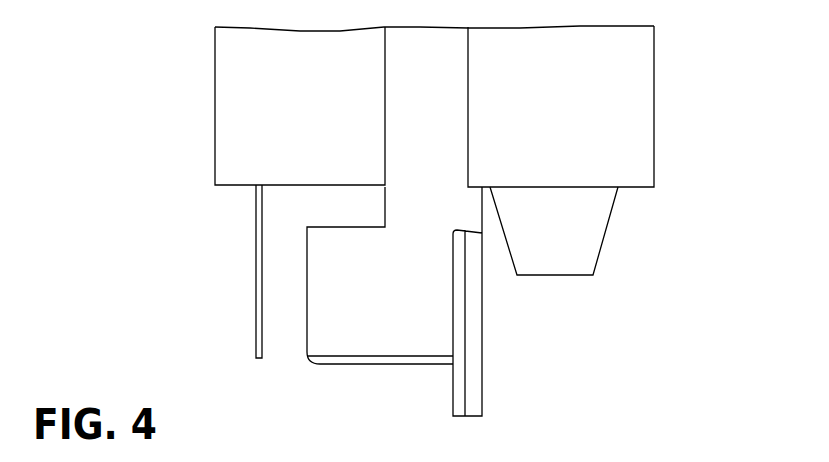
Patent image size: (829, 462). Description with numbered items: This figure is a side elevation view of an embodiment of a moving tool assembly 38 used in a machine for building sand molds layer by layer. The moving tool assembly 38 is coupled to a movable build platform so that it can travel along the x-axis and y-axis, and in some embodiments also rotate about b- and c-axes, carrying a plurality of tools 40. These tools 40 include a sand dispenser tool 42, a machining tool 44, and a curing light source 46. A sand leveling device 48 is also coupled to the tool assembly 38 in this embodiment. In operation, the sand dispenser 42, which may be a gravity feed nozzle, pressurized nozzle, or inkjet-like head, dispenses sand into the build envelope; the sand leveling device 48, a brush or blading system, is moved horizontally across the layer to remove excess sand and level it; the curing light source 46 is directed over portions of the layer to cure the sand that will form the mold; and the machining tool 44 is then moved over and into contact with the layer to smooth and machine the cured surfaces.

The moving tool assembly 38 is at (655, 99).
The tools 40 is at (192, 187).
The sand dispenser tool 42 is at (578, 237).
The machining tool 44 is at (256, 251).
The curing light source 46 is at (334, 345).
The sand leveling device 48 is at (474, 368).